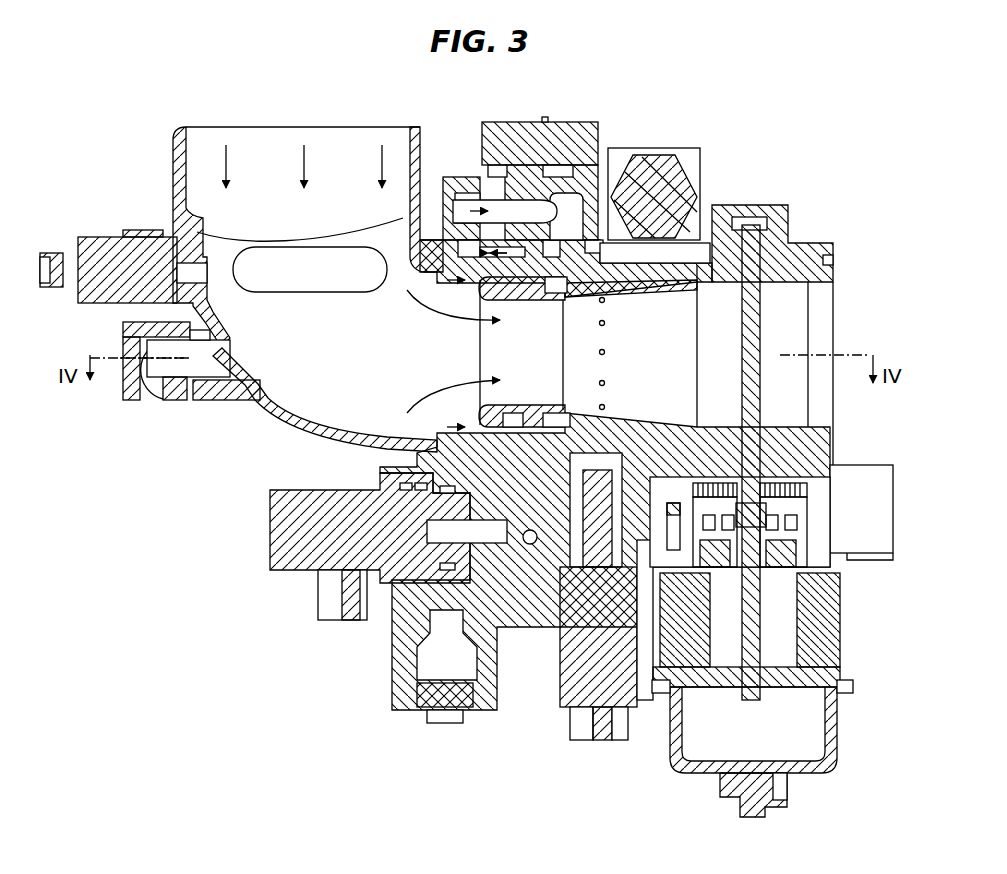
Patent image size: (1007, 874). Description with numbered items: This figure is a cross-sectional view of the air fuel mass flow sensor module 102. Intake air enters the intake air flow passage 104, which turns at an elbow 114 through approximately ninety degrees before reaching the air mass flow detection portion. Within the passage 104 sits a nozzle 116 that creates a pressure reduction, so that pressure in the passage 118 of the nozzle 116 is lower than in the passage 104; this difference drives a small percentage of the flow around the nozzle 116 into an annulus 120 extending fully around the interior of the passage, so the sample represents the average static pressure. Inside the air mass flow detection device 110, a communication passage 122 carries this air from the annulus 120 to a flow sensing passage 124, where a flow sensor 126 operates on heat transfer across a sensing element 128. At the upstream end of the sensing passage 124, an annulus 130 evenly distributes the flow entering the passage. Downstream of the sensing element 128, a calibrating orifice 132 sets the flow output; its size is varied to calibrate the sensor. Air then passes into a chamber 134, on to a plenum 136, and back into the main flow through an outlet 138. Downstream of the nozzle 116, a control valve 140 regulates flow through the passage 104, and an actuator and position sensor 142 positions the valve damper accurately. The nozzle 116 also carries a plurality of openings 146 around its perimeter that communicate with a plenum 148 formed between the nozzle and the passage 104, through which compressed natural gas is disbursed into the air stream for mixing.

The air fuel mass flow sensor module 102 is at (237, 490).
The intake air flow passage 104 is at (173, 163).
The air mass flow detection device 110 is at (597, 128).
The elbow 114 is at (303, 427).
The nozzle 116 is at (533, 408).
The passage of the nozzle 118 is at (524, 360).
The annulus 120 is at (487, 413).
The communication passage 122 is at (445, 243).
The flow sensing passage 124 is at (548, 212).
The flow sensor 126 is at (555, 122).
The sensing element 128 is at (527, 203).
The annulus 130 is at (465, 180).
The calibrating orifice 132 is at (596, 196).
The chamber 134 is at (630, 230).
The plenum 136 is at (600, 304).
The outlet 138 is at (557, 300).
The control valve 140 is at (762, 343).
The actuator and position sensor 142 is at (833, 622).
The openings 146 is at (605, 383).
The plenum 148 is at (633, 290).